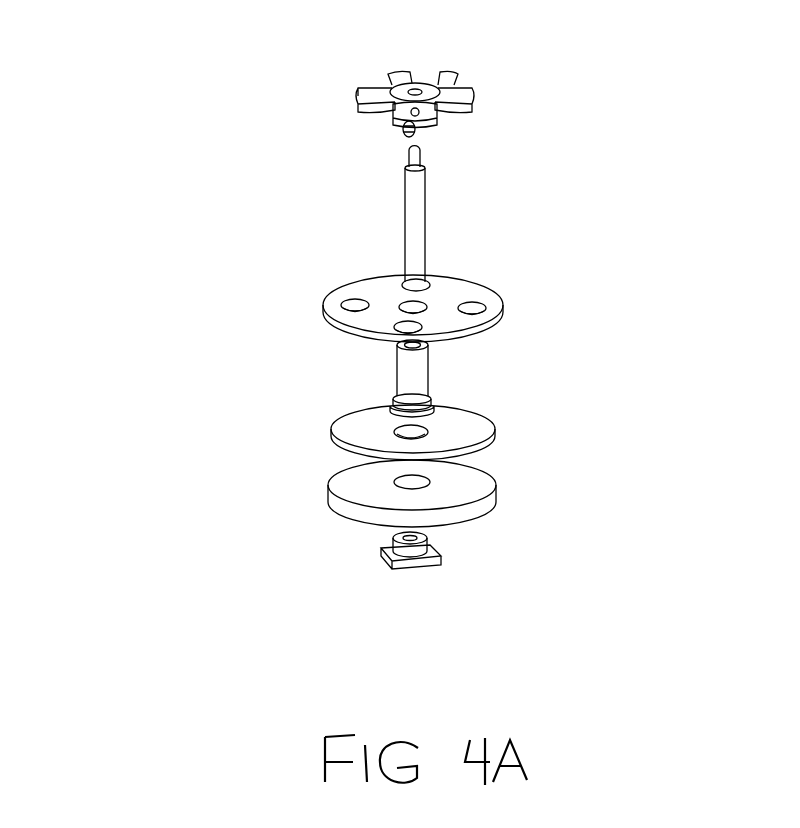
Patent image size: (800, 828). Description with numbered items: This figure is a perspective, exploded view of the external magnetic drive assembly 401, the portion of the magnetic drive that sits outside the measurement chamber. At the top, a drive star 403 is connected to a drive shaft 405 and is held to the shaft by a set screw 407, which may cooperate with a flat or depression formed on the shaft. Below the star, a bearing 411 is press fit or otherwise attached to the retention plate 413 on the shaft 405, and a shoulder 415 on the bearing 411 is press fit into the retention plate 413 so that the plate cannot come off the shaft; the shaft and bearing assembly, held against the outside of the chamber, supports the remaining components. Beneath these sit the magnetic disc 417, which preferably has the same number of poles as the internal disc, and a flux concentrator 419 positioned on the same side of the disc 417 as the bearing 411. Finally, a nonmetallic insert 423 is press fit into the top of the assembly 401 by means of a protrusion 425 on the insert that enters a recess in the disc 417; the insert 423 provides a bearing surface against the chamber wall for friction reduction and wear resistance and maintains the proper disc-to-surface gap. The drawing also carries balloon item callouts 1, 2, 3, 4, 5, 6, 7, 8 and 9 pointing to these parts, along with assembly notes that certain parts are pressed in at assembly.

The external magnetic drive assembly 401 is at (670, 185).
The drive star 403 is at (473, 90).
The drive shaft 405 is at (463, 223).
The set screw 407 is at (402, 131).
The bearing 411 is at (407, 362).
The retention plate 413 is at (493, 301).
The shoulder 415 is at (432, 397).
The disc 417 is at (342, 480).
The flux concentrator 419 is at (337, 430).
The nonmetallic insert 423 is at (440, 538).
The protrusion 425 is at (383, 537).
The item 1 knob 1 is at (358, 85).
The item 2 shaft 2 is at (402, 199).
The item 3 mount 3 is at (373, 572).
The item 4 lower disc 4 is at (338, 503).
The item 5 flange 5 is at (437, 410).
The item 6 hub 6 is at (397, 375).
The item 7 perforated disc 7 is at (485, 335).
The item 8 upper disc 8 is at (473, 453).
The item 9 nut 9 is at (421, 131).